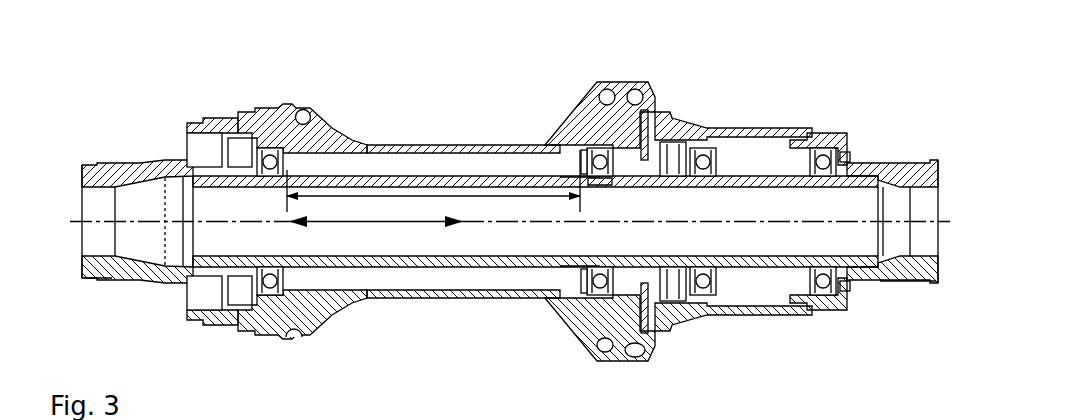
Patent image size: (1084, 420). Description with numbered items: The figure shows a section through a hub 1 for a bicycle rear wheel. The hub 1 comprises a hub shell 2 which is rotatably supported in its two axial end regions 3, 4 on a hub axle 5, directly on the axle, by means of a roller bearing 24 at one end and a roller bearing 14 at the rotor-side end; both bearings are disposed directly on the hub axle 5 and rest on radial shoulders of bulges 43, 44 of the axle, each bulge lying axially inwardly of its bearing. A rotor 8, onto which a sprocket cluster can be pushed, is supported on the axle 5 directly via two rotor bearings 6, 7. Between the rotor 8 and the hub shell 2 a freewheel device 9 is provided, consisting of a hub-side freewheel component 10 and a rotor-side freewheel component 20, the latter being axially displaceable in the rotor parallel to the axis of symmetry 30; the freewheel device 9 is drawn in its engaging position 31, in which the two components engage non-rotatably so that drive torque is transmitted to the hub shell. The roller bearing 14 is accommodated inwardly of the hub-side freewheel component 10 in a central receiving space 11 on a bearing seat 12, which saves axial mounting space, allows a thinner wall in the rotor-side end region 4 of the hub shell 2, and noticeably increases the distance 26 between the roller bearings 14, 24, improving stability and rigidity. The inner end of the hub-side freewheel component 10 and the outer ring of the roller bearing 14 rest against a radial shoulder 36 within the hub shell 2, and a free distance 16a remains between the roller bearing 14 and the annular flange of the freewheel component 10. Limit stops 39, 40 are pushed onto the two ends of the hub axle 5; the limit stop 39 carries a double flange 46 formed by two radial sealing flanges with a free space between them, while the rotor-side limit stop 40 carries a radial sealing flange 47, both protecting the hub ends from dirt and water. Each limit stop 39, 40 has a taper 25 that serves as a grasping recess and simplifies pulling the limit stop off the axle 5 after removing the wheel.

The hub 1 is at (146, 60).
The hub shell 2 is at (451, 145).
The axial end region 3 is at (277, 88).
The axial end region 4 is at (597, 72).
The hub axle 5 is at (441, 257).
The rotor bearing 6 is at (700, 190).
The rotor bearing 7 is at (822, 190).
The rotor 8 is at (822, 132).
The freewheel device 9 is at (667, 105).
The hub-side freewheel component 10 is at (590, 303).
The central receiving space 11 is at (578, 160).
The bearing seat 12 is at (602, 151).
The roller bearing 14 is at (609, 190).
The free distance 16a is at (626, 140).
The rotor-side freewheel component 20 is at (666, 295).
The roller bearing 24 is at (279, 192).
The taper 25 is at (115, 283).
The distance 26 is at (437, 197).
The axis of symmetry 30 is at (367, 225).
The engaging position 31 is at (665, 350).
The radial shoulder 36 is at (575, 293).
The limit stop 39 is at (90, 163).
The limit stop 40 is at (925, 160).
The bulge 43 is at (293, 272).
The bulge 44 is at (572, 268).
The double flange 46 is at (210, 150).
The radial sealing flange 47 is at (857, 152).